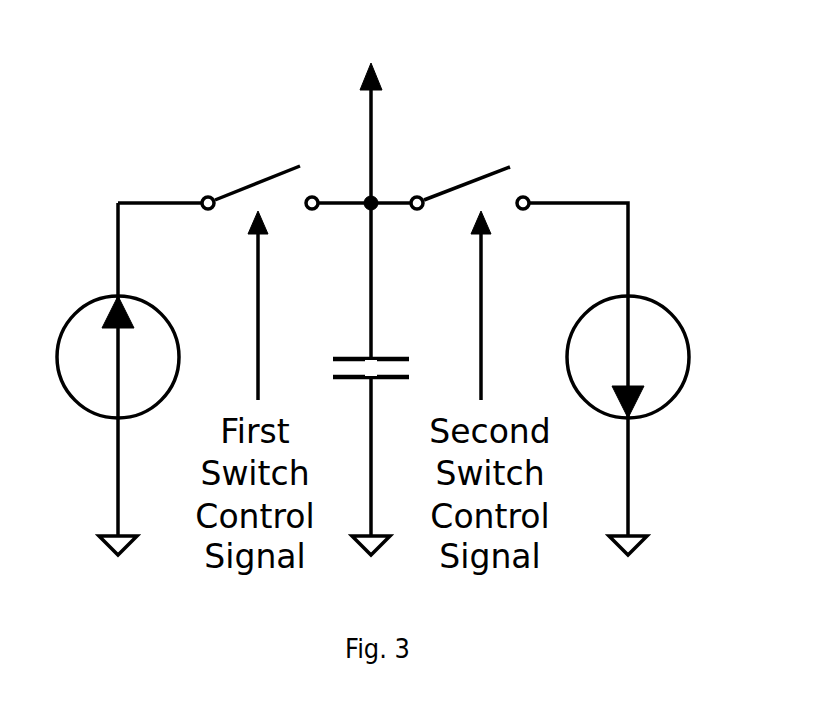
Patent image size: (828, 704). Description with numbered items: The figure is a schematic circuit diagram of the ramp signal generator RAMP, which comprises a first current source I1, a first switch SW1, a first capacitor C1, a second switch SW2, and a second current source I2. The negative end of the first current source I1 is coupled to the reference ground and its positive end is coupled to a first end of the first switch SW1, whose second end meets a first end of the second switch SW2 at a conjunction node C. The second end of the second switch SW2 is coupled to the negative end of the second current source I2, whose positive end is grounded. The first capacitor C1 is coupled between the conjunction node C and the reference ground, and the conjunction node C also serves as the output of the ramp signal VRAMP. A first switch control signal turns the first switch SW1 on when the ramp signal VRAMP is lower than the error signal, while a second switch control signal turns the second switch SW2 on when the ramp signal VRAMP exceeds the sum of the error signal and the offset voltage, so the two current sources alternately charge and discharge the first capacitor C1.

The ramp signal generator RAMP is at (186, 50).
The ramp signal VRAMP is at (372, 53).
The first switch SW1 is at (260, 165).
The second switch SW2 is at (470, 165).
The conjunction node C is at (381, 188).
The first capacitor C1 is at (379, 345).
The first current source I1 is at (93, 357).
The second current source I2 is at (653, 357).